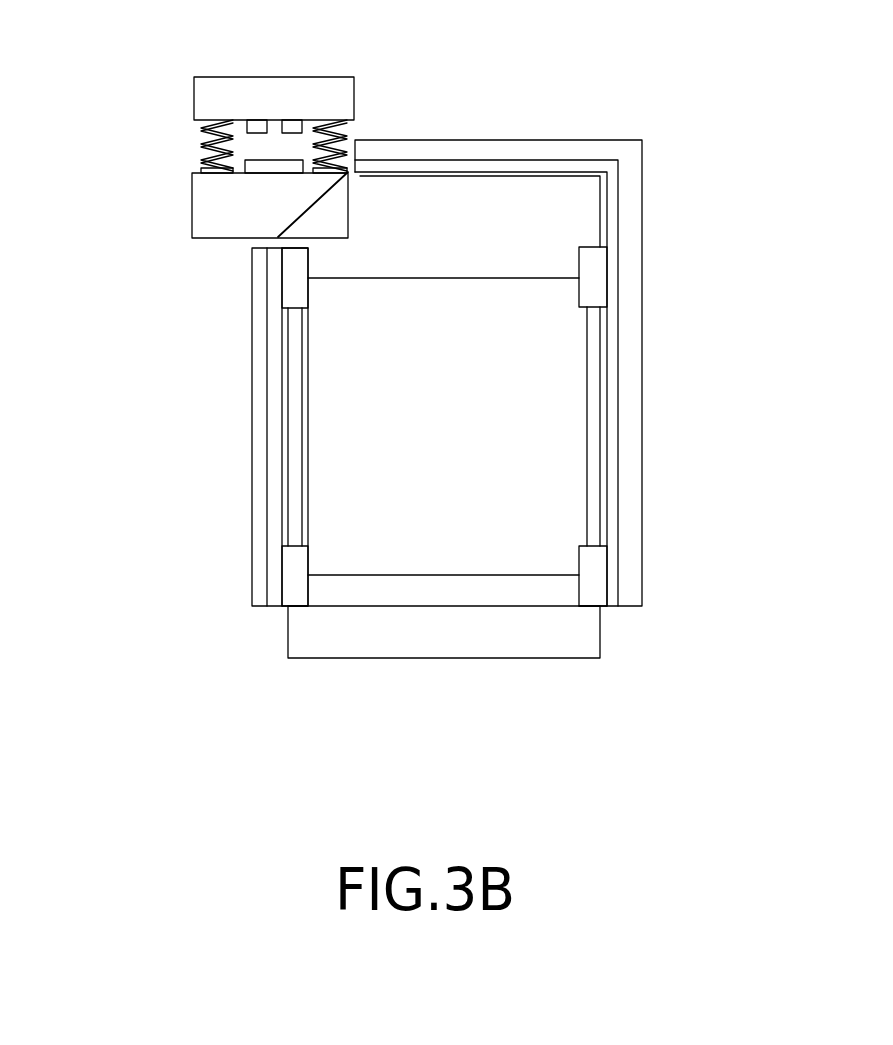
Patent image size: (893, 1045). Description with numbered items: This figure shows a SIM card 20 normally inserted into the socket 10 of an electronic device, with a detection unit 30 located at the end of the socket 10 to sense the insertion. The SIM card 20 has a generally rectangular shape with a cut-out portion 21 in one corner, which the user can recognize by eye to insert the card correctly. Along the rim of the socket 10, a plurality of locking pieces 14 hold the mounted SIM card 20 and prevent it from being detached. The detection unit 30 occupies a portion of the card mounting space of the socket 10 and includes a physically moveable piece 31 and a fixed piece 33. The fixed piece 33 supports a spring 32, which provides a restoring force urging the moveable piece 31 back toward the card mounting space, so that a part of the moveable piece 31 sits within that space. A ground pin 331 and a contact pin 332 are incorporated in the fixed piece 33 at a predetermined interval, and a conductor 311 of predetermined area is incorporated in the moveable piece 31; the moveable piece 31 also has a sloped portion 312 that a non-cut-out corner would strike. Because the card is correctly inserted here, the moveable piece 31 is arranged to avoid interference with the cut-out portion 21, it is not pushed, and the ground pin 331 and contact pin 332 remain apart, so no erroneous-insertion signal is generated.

The socket 10 is at (655, 380).
The locking pieces 14 is at (592, 247).
The SIM card 20 is at (445, 670).
The cut-out portion 21 is at (278, 237).
The detection unit 30 is at (134, 82).
The moveable piece 31 is at (190, 205).
The conductor 311 is at (284, 158).
The sloped portion 312 is at (278, 237).
The spring 32 is at (207, 152).
The fixed piece 33 is at (332, 77).
The ground pin 331 is at (255, 123).
The contact pin 332 is at (293, 123).